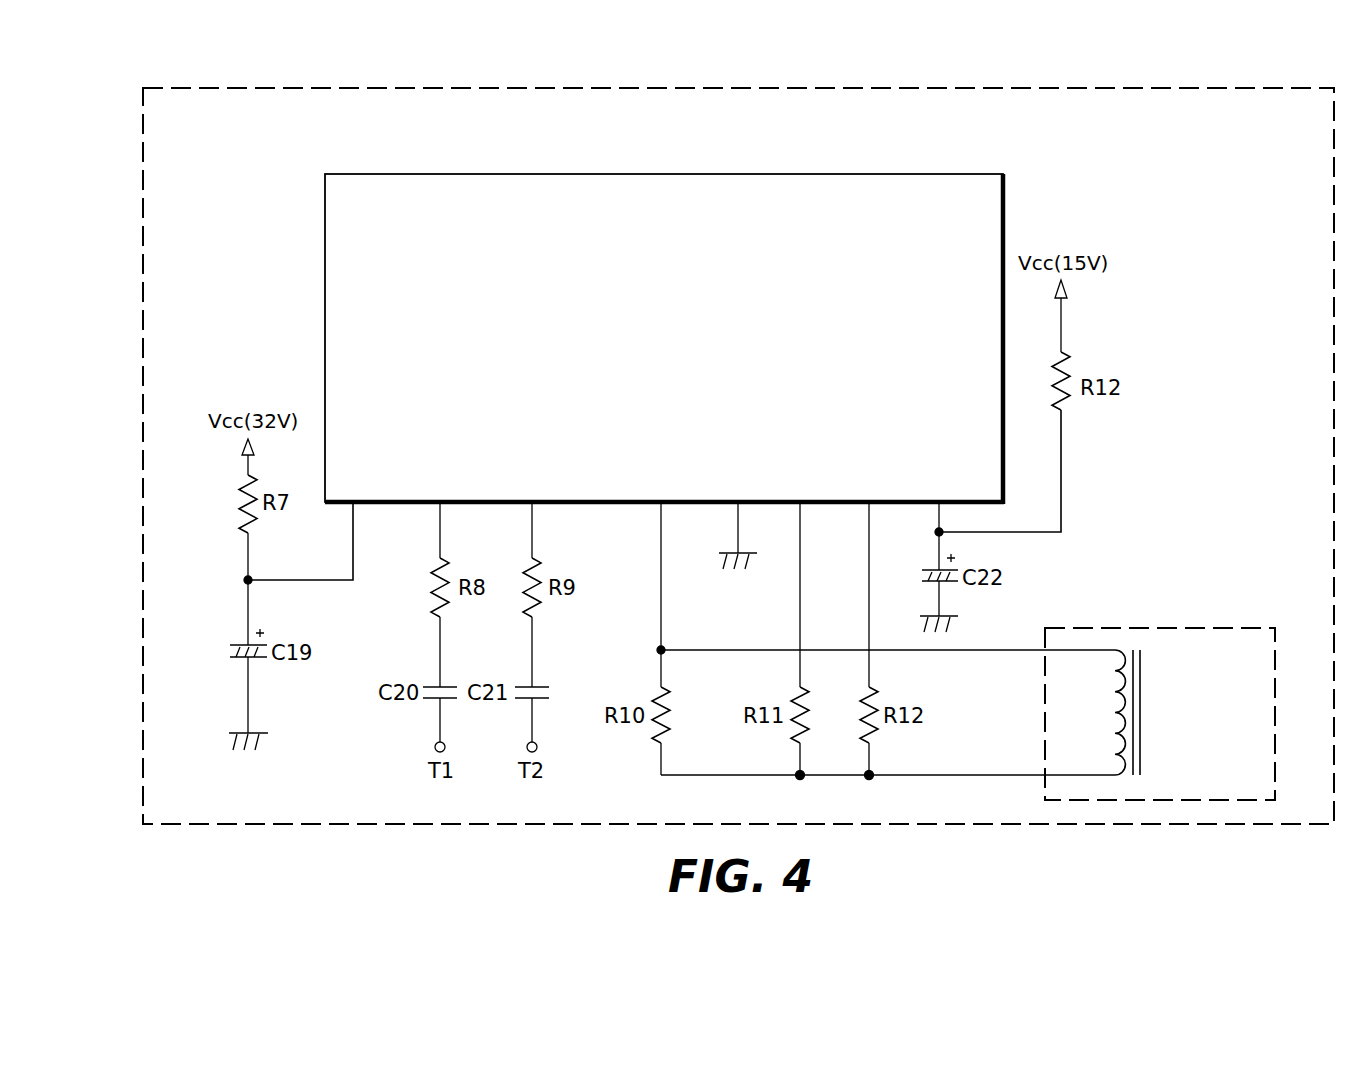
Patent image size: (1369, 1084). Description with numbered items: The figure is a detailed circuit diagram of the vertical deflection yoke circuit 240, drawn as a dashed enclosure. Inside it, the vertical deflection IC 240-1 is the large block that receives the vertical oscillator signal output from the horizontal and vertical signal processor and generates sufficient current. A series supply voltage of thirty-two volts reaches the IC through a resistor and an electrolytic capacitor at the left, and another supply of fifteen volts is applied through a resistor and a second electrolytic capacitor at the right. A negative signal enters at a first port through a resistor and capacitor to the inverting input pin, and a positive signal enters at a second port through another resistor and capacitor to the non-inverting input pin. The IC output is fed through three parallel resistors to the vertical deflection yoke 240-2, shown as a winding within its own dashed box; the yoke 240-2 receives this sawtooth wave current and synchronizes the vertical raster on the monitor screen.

The vertical deflection yoke circuit 240 is at (940, 88).
The vertical deflection IC 240-1 is at (460, 175).
The vertical deflection yoke 240-2 is at (1152, 628).